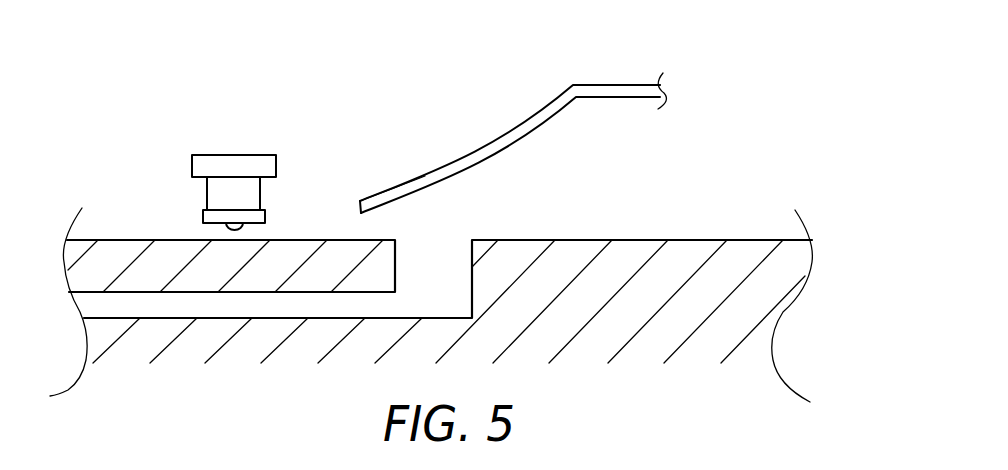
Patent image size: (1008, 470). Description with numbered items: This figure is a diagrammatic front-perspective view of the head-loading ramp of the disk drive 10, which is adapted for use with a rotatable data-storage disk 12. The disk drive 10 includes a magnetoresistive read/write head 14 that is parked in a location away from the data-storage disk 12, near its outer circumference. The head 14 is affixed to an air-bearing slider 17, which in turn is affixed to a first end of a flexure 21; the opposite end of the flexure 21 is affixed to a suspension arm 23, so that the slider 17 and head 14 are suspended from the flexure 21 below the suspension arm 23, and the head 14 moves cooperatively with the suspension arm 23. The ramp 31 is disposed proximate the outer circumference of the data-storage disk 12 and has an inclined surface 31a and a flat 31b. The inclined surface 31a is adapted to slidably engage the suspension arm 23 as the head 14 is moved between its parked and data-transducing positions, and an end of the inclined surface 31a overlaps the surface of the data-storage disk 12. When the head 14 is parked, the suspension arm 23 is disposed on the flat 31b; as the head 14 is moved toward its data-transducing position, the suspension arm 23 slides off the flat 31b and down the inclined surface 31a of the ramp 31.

The disk drive 10 is at (698, 195).
The data-storage disk 12 is at (132, 238).
The magnetoresistive read/write head 14 is at (232, 229).
The air-bearing slider 17 is at (266, 218).
The flexure 21 is at (262, 190).
The suspension arm 23 is at (242, 156).
The ramp 31 is at (519, 109).
The inclined surface 31a is at (395, 190).
The flat 31b is at (599, 84).